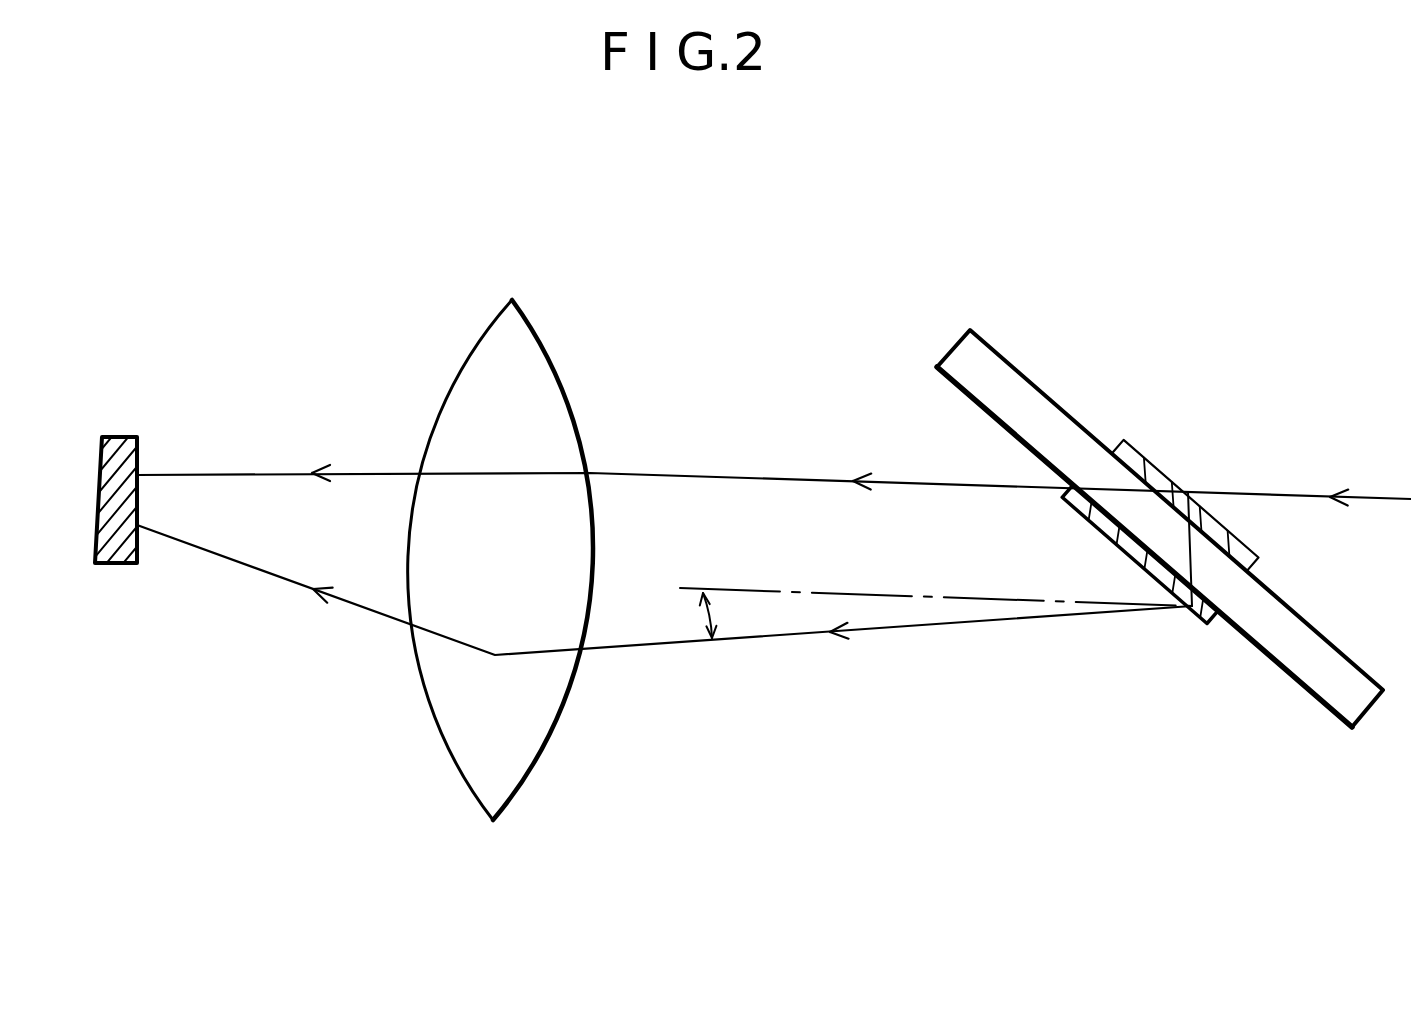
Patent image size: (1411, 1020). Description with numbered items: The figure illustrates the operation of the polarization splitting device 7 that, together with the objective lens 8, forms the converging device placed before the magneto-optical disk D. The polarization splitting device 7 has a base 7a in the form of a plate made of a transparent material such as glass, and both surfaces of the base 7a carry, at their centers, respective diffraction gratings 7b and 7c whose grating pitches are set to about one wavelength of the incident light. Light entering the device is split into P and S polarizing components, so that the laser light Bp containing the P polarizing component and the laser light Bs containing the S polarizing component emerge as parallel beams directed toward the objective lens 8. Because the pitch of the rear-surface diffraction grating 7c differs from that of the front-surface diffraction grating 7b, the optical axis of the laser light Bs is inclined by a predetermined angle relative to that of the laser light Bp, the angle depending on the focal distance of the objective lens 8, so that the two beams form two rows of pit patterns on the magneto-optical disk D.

The polarization splitting device 7 is at (1147, 464).
The base 7a is at (955, 343).
The diffraction grating 7b is at (1115, 445).
The diffraction grating 7c is at (1068, 497).
The objective lens 8 is at (540, 338).
The magneto-optical disk D is at (112, 436).
The laser light containing the P polarizing component Bp is at (733, 477).
The laser light containing the S polarizing component Bs is at (760, 640).